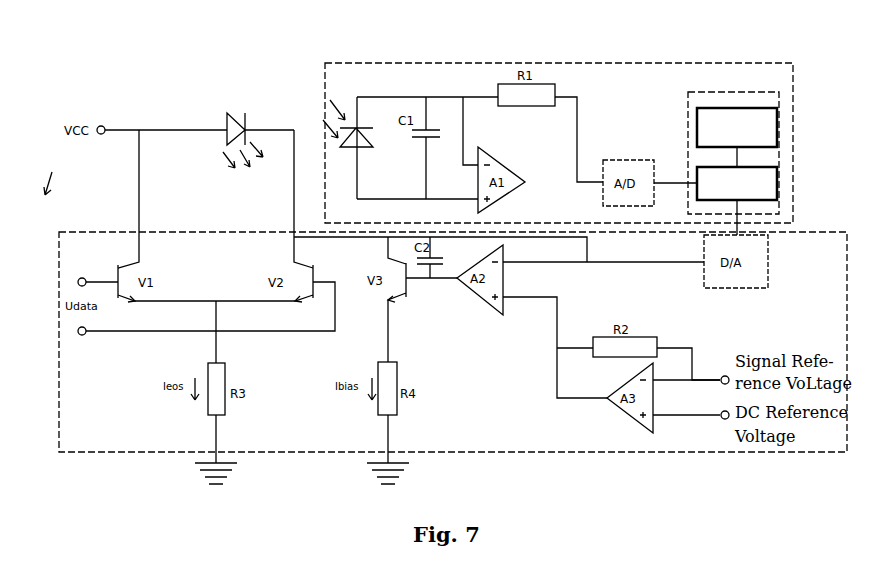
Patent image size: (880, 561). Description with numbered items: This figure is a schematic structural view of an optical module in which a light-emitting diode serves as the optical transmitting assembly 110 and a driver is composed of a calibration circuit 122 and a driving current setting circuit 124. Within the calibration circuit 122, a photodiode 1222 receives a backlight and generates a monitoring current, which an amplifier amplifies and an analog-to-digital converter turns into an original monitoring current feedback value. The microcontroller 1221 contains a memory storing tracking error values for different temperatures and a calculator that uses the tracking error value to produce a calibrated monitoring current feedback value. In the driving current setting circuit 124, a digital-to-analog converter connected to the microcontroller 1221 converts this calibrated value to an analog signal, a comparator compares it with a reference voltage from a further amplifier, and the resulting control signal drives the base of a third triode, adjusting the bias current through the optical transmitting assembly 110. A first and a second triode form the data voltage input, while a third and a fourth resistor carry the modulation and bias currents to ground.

The optical transmitting assembly 110 is at (224, 111).
The calibration circuit 122 is at (449, 55).
The photodiode 1222 is at (346, 99).
The microcontroller 1221 is at (777, 145).
The driving current setting circuit 124 is at (56, 343).